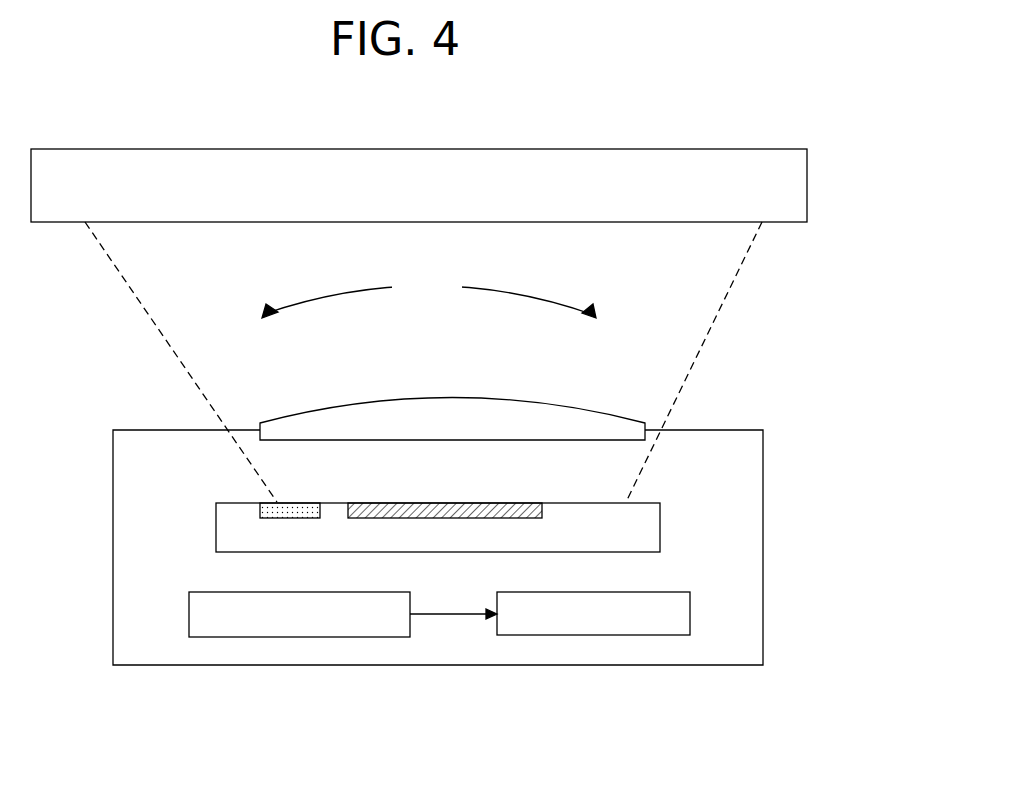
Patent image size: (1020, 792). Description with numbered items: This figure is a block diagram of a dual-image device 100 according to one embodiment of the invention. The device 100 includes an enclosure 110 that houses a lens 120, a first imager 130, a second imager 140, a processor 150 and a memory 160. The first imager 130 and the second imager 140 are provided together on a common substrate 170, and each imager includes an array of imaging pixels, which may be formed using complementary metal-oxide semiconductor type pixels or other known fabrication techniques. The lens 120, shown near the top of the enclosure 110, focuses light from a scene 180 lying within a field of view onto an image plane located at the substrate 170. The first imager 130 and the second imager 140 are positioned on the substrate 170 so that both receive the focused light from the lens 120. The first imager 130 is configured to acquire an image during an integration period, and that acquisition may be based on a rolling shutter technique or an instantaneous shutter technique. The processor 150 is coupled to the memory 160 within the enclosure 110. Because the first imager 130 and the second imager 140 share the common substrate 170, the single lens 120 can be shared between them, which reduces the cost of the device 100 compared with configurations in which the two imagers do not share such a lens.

The device 100 is at (765, 77).
The enclosure 110 is at (735, 429).
The lens 120 is at (598, 405).
The first imager 130 is at (505, 503).
The second imager 140 is at (282, 502).
The processor 150 is at (282, 637).
The memory 160 is at (691, 620).
The substrate 170 is at (661, 515).
The scene 180 is at (580, 148).